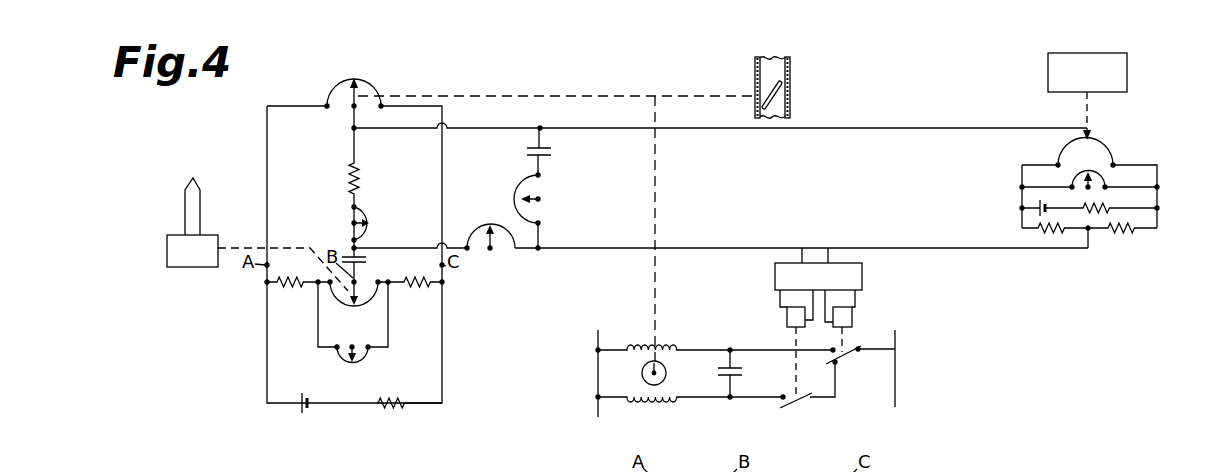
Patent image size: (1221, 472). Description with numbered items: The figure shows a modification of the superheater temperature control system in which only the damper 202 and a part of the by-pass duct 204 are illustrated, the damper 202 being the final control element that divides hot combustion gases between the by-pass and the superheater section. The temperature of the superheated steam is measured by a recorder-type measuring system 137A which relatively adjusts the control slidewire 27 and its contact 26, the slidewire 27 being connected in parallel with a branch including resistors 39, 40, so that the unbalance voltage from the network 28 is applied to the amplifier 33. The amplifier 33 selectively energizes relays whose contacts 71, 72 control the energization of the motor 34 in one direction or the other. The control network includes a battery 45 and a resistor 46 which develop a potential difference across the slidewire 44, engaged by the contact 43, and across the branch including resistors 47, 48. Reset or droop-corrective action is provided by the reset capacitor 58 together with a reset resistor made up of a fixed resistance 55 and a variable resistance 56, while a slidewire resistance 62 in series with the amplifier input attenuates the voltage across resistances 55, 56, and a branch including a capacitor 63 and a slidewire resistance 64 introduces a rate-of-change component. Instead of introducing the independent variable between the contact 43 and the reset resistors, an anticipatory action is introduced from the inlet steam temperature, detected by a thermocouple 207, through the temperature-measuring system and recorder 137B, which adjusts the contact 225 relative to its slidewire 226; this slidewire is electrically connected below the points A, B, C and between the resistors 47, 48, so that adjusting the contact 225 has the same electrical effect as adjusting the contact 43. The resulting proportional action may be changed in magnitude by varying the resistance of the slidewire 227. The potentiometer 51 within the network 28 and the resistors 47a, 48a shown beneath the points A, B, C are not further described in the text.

The contact 26 is at (1085, 132).
The control slidewire 27 is at (1108, 146).
The network 28 is at (1192, 143).
The amplifier 33 is at (863, 285).
The motor 34 is at (631, 384).
The resistor 39 is at (1128, 233).
The resistor 40 is at (1040, 230).
The contact 43 is at (351, 99).
The slidewire 44 is at (370, 86).
The battery 45 is at (303, 392).
The resistor 46 is at (400, 410).
The resistor 47 is at (292, 290).
The resistor 48 is at (415, 290).
The potentiometer 51 is at (1103, 182).
The fixed resistance 55 is at (357, 172).
The variable resistance 56 is at (364, 216).
The reset capacitor 58 is at (347, 256).
The slidewire resistance 62 is at (473, 237).
The capacitor 63 is at (557, 152).
The slidewire resistance 64 is at (518, 187).
The contacts 71 is at (793, 402).
The contacts 72 is at (847, 354).
The measuring system and recorder 137A is at (1127, 65).
The temperature-measuring system and recorder 137B is at (192, 268).
The damper 202 is at (781, 85).
The by-pass duct 204 is at (771, 63).
The thermocouple 207 is at (191, 183).
The contact 225 is at (358, 290).
The slidewire 226 is at (347, 305).
The slidewire 227 is at (368, 358).
The resistor 47a is at (692, 469).
The resistor 48a is at (799, 469).